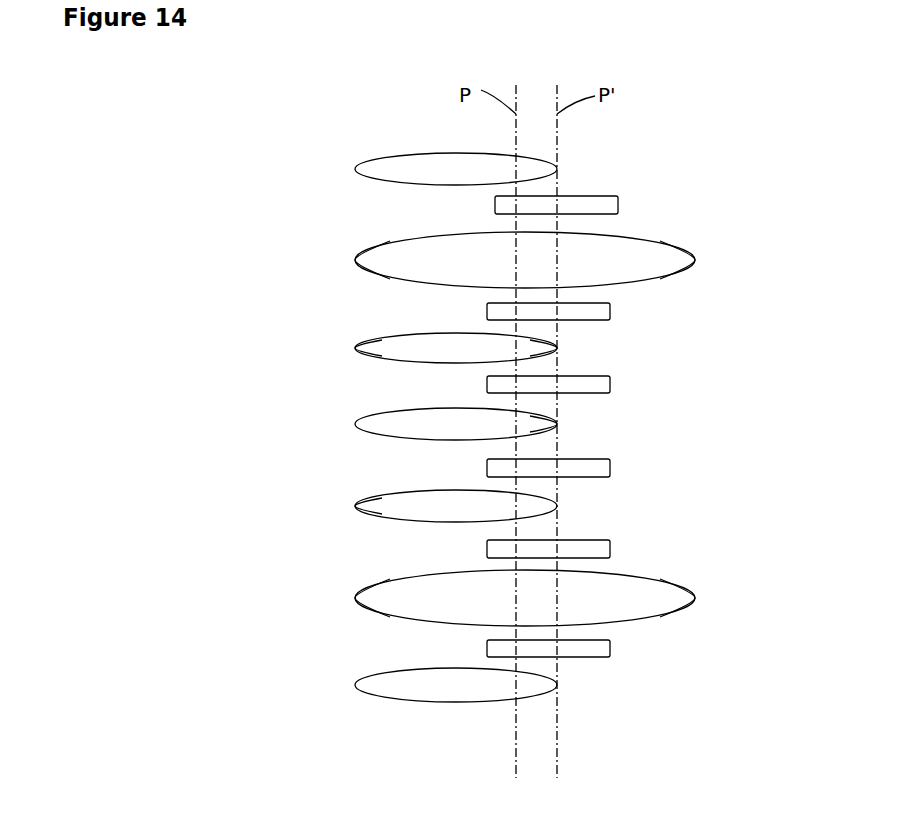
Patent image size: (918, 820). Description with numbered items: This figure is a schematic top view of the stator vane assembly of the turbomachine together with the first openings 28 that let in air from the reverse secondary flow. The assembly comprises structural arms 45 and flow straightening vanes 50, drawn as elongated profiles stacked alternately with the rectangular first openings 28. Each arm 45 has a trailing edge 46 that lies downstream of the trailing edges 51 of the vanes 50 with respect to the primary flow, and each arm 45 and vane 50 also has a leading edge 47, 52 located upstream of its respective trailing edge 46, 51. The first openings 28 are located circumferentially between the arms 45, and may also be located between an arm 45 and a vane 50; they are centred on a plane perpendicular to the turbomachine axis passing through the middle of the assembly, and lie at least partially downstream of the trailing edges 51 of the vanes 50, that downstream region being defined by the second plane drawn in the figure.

The first openings 28 is at (618, 207).
The structural arms 45 is at (377, 247).
The trailing edges of the arms 46 is at (695, 260).
The leading edges of the arms 47 is at (352, 262).
The flow straightening vanes 50 is at (435, 155).
The trailing edges of the vanes 51 is at (557, 348).
The leading edges of the vanes 52 is at (355, 348).